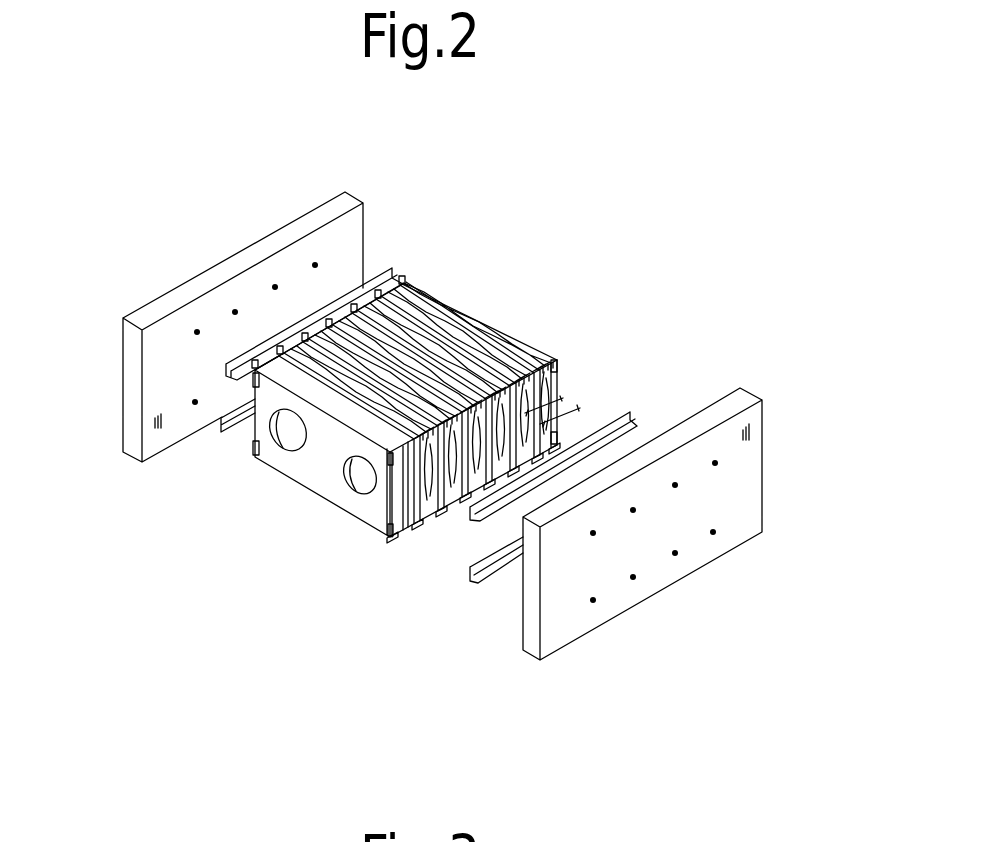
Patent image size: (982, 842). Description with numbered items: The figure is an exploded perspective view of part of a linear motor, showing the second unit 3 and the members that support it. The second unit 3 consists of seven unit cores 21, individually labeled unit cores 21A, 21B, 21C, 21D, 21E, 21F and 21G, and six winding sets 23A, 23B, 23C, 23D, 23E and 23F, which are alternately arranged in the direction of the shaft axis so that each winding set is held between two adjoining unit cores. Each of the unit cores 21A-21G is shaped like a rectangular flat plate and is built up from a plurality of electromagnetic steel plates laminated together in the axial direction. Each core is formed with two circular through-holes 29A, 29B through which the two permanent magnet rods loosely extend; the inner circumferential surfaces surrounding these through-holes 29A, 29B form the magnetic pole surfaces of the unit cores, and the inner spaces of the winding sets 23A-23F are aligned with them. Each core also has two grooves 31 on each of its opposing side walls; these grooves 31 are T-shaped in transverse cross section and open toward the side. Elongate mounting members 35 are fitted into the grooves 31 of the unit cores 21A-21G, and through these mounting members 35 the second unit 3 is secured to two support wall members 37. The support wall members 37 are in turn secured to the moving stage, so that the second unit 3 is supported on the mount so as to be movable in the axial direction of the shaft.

The second unit 3 is at (510, 268).
The unit cores 21 is at (516, 343).
The unit core 21A is at (320, 493).
The unit core 21B is at (437, 452).
The unit core 21C is at (467, 448).
The unit core 21D is at (465, 450).
The unit core 21E is at (493, 480).
The unit core 21F is at (513, 457).
The unit core 21G is at (560, 427).
The winding set 23A is at (288, 357).
The winding set 23B is at (300, 350).
The winding set 23C is at (317, 337).
The winding set 23D is at (335, 318).
The winding set 23E is at (400, 335).
The winding set 23F is at (500, 350).
The circular through-hole 29A is at (285, 450).
The circular through-hole 29B is at (353, 493).
The grooves 31 is at (254, 392).
The mounting members 35 is at (392, 270).
The support wall members 37 is at (153, 307).